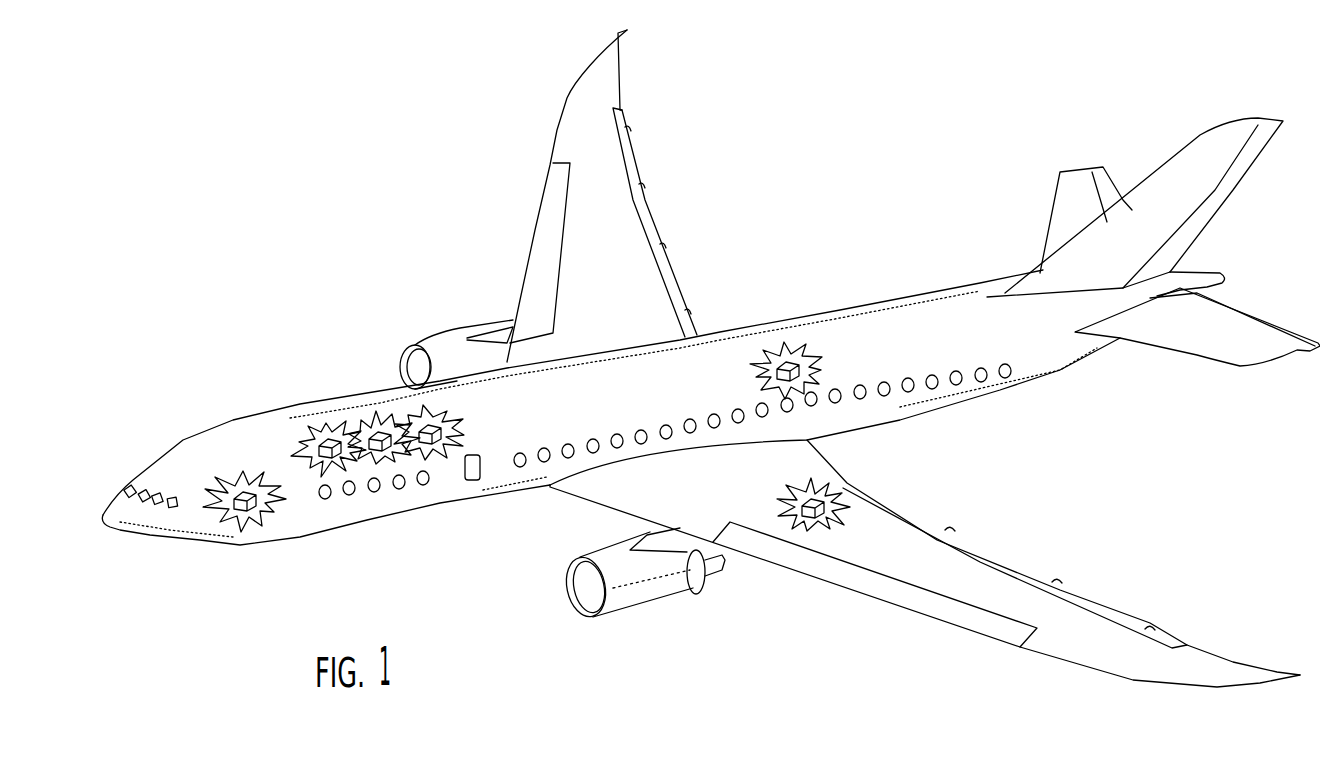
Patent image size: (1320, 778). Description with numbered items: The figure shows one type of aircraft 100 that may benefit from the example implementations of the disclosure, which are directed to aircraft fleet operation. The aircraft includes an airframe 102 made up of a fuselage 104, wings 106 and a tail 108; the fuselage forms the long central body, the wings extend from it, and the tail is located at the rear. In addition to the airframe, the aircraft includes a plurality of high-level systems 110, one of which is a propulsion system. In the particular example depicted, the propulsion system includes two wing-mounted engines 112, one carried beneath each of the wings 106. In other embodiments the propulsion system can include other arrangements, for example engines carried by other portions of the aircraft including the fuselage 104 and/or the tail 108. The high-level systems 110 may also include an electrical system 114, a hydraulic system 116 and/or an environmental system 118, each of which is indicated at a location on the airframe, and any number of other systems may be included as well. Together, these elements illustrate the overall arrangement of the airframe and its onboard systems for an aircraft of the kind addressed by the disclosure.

The aircraft 100 is at (346, 205).
The airframe 102 is at (346, 392).
The fuselage 104 is at (367, 522).
The wings 106 is at (557, 137).
The tail 108 is at (1012, 187).
The high-level systems 110 is at (1143, 491).
The wing-mounted engines 112 is at (440, 338).
The electrical system 114 is at (243, 493).
The hydraulic system 116 is at (813, 498).
The environmental system 118 is at (792, 367).